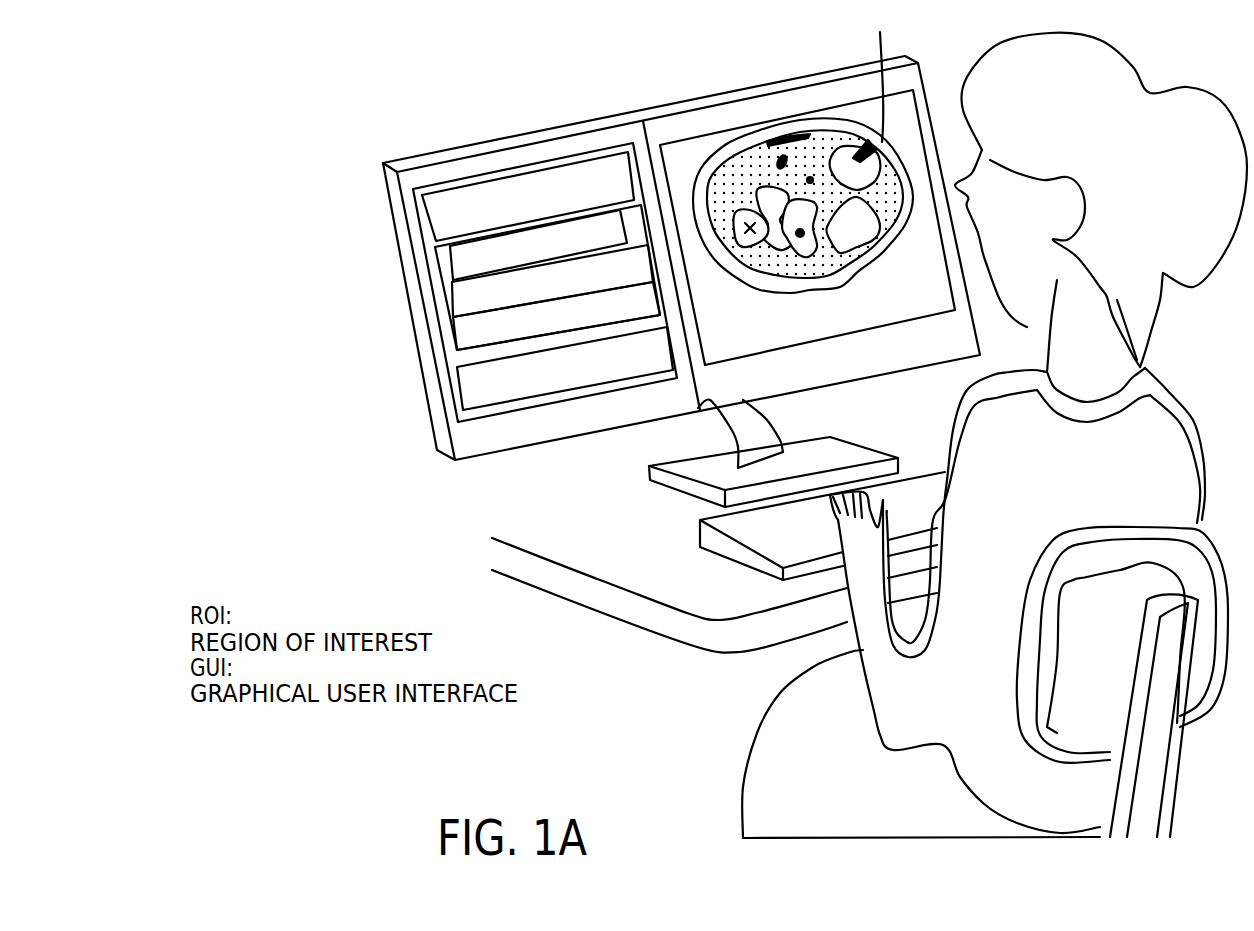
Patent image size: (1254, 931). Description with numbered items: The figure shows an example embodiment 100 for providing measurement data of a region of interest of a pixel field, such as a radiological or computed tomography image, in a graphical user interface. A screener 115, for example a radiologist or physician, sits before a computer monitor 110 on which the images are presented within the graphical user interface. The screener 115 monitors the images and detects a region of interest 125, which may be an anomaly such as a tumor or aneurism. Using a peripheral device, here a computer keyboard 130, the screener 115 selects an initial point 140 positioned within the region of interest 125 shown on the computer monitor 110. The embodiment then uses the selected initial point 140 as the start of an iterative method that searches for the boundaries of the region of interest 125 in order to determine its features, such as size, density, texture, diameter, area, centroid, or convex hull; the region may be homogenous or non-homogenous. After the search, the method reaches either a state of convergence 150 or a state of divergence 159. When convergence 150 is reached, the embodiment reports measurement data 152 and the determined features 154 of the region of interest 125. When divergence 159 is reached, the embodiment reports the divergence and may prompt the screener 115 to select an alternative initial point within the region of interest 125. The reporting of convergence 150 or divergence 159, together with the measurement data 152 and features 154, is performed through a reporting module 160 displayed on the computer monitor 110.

The example embodiment 100 is at (475, 78).
The computer monitor 110 is at (653, 256).
The screener 115 is at (1066, 489).
The region of interest 125 is at (722, 253).
The computer keyboard 130 is at (809, 539).
The initial point 140 is at (723, 119).
The state of convergence 150 is at (450, 260).
The measurement data 152 is at (447, 306).
The determined features 154 is at (447, 340).
The divergence 159 is at (455, 395).
The reporting module 160 is at (420, 216).